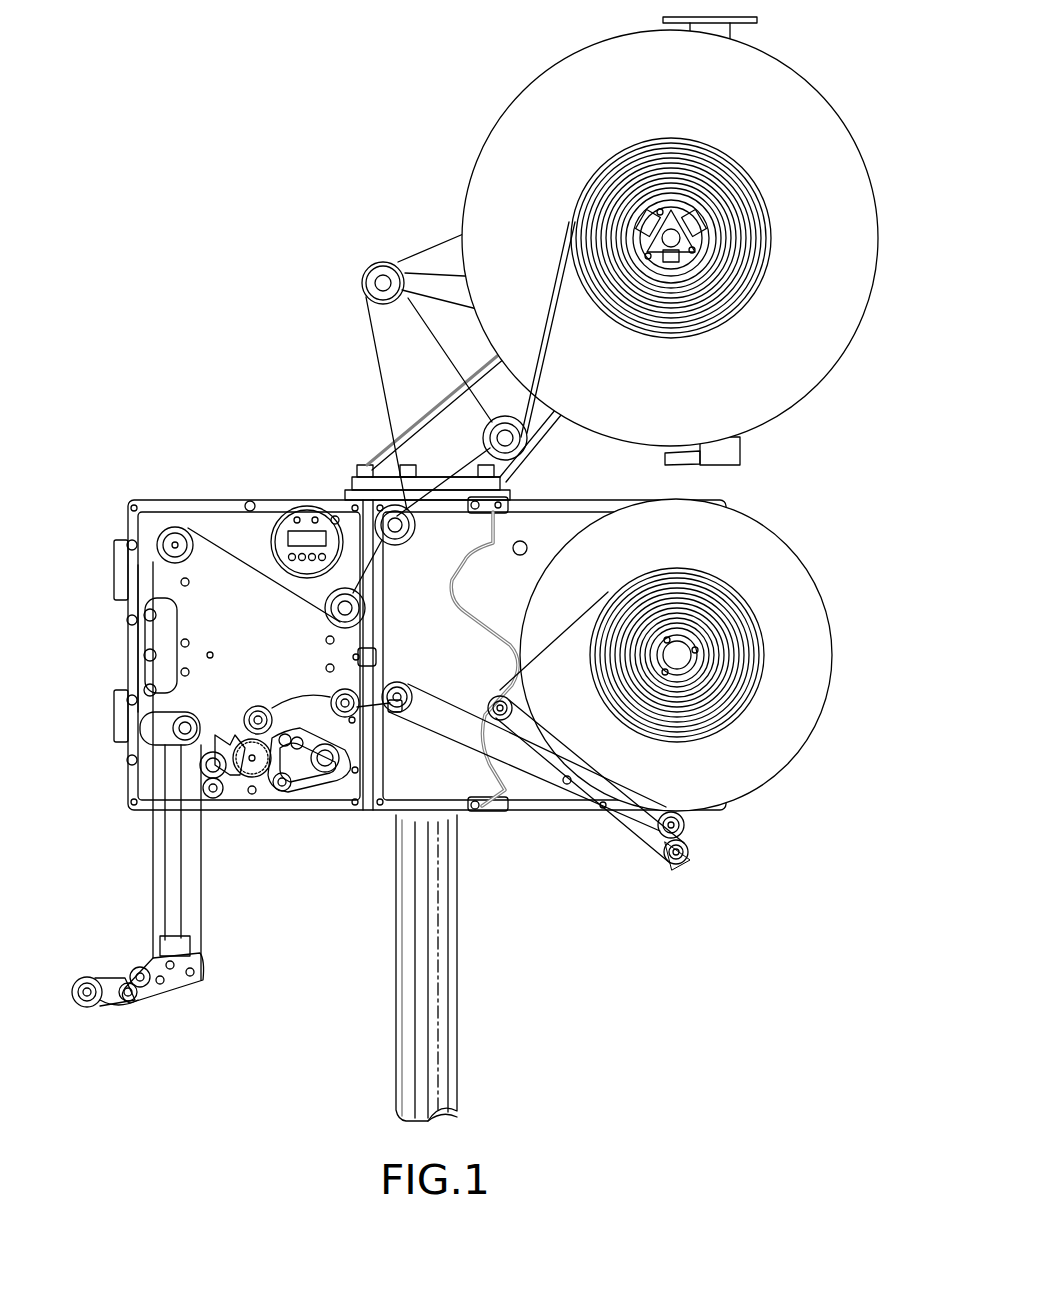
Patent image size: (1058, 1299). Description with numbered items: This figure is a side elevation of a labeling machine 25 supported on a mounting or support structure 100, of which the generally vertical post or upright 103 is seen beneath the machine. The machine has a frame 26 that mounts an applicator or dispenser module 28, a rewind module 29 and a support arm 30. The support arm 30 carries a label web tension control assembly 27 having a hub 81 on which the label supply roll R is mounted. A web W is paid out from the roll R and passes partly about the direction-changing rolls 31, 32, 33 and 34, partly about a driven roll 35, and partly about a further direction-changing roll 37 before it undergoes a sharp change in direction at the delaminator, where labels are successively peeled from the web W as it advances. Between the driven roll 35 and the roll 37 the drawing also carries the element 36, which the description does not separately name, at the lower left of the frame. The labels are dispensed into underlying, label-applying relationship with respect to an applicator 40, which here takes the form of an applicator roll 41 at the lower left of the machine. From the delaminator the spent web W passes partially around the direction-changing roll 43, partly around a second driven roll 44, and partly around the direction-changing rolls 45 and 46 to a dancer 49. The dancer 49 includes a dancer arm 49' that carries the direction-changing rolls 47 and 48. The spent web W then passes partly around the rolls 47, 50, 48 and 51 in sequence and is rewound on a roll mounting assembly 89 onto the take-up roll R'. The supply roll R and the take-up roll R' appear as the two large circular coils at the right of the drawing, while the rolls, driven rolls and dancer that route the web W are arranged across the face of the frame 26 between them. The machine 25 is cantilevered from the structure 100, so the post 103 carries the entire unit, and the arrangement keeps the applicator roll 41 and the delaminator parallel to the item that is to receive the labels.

The machine 25 is at (205, 336).
The frame 26 is at (152, 492).
The label web tension control assembly 27 is at (410, 246).
The applicator or dispenser assembly or module 28 is at (233, 540).
The rewind or rewind module 29 is at (427, 768).
The support arm 30 is at (541, 444).
The direction-changing roll 31 is at (510, 417).
The direction-changing roll 32 is at (376, 416).
The direction-changing roll 33 is at (412, 538).
The direction-changing roll 34 is at (330, 602).
The driven roll 35 is at (164, 556).
The applicator arm 36 is at (182, 992).
The direction-changing roll 37 is at (133, 968).
The applicator 40 is at (80, 976).
The applicator roll 41 is at (88, 1008).
The direction-changing roll 43 is at (222, 792).
The driven roll 44 is at (238, 744).
The direction-changing roll 45 is at (258, 705).
The direction-changing roll 46 is at (343, 702).
The direction-changing roll 47 is at (688, 856).
The direction-changing roll 48 is at (685, 827).
The dancer 49 is at (657, 918).
The dancer arm 49' is at (737, 865).
The direction-changing roll 50 is at (410, 700).
The direction-changing roll 51 is at (513, 714).
The hub 81 is at (705, 222).
The roll mounting assembly 89 is at (676, 640).
The mounting or support structure 100 is at (463, 1090).
The post or upright 103 is at (447, 1033).
The label supply roll R is at (670, 231).
The take-up roll R' is at (666, 655).
The web W is at (205, 918).